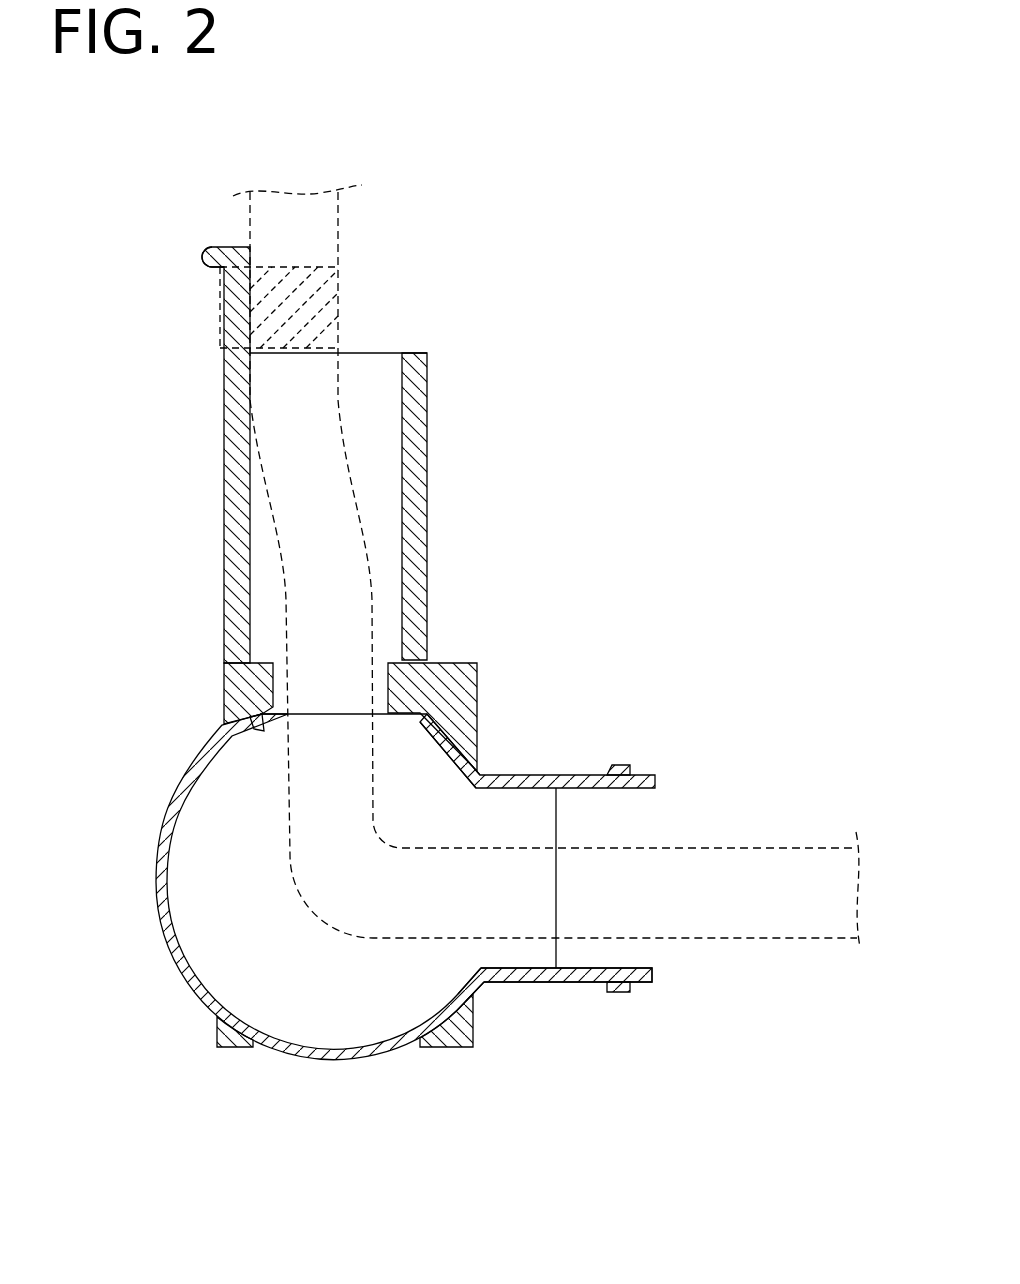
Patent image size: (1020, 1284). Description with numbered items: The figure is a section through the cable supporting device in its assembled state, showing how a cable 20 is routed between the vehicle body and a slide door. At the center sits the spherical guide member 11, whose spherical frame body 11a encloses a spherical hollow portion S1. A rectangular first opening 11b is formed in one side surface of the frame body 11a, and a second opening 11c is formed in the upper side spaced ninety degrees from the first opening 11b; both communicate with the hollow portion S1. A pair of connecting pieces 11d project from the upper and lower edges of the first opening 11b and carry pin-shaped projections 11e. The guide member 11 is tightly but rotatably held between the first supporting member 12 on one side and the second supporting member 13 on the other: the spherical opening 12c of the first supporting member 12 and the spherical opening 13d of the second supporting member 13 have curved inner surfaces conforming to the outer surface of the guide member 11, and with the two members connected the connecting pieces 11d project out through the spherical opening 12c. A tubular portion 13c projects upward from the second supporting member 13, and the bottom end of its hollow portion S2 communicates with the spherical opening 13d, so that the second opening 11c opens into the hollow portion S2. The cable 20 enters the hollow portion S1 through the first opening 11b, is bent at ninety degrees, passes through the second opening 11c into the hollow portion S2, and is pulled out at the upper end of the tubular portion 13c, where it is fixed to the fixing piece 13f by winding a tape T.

The spherical guide member 11 is at (437, 760).
The spherical frame body 11a is at (192, 1007).
The first opening 11b is at (513, 955).
The second opening 11c is at (378, 714).
The connecting pieces 11d is at (655, 782).
The pin-shaped projections 11e is at (618, 766).
The first supporting member 12 is at (494, 683).
The spherical opening 12c is at (480, 760).
The second supporting member 13 is at (172, 546).
The tubular portion 13c is at (232, 547).
The spherical opening 13d is at (183, 780).
The fixing piece 13f is at (222, 286).
The tape T is at (220, 318).
The spherical hollow portion S1 is at (292, 1000).
The hollow portion S2 is at (387, 523).
The cable 20 is at (373, 940).